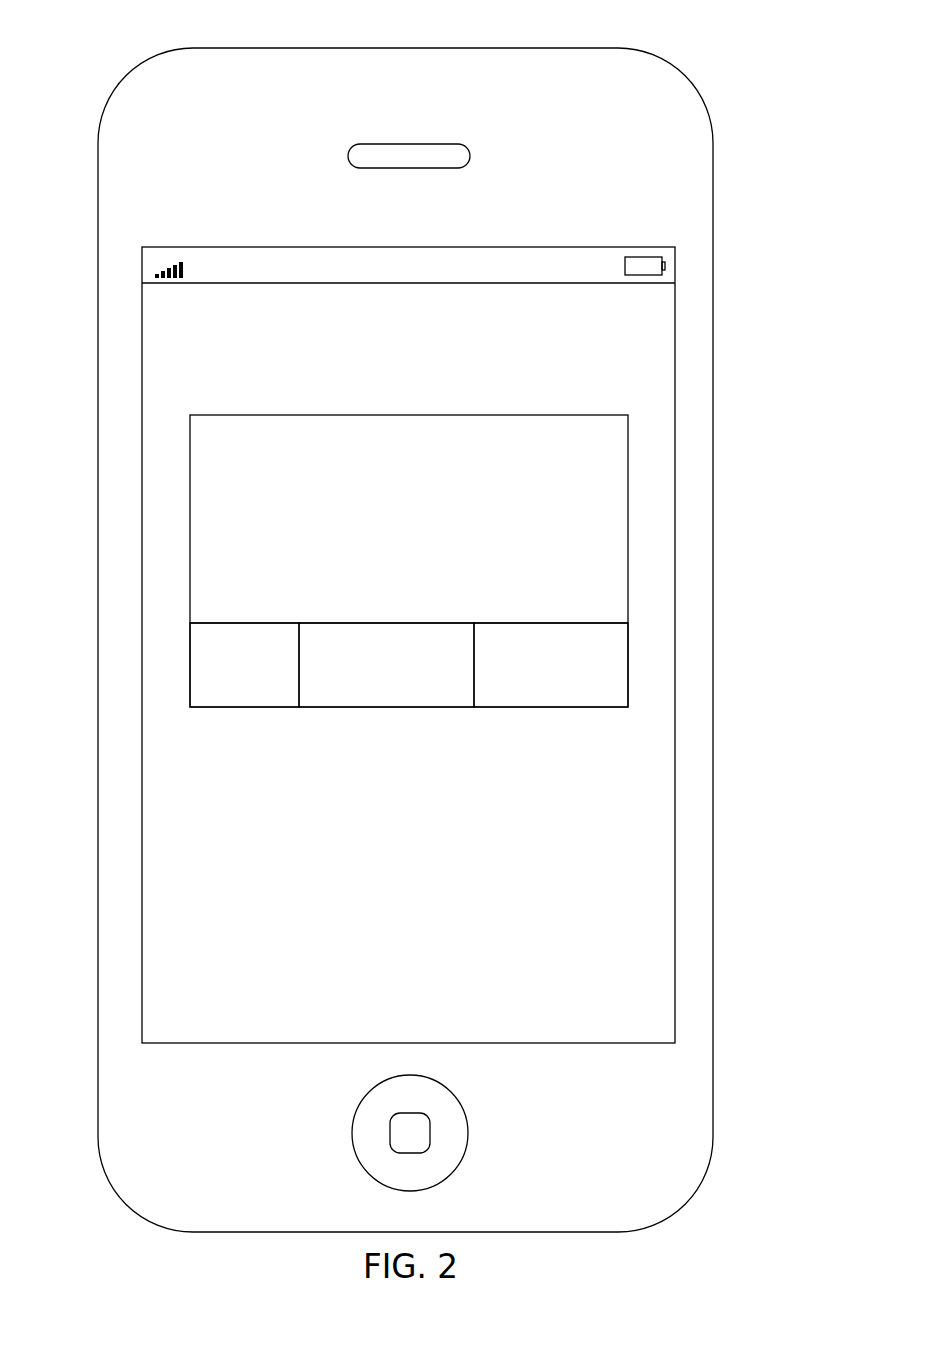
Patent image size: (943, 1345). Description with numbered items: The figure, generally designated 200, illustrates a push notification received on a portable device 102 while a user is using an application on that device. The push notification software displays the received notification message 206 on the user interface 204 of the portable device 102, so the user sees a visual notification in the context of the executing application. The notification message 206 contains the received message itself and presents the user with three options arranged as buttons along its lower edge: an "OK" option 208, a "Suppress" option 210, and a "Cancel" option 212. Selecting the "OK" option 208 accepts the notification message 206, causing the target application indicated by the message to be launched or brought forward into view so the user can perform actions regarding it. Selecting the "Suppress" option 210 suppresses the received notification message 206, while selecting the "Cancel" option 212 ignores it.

The push notification illustration 200 is at (692, 56).
The portable device 102 is at (124, 74).
The user interface 204 is at (675, 314).
The notification message 206 is at (628, 492).
The OK option 208 is at (247, 688).
The Suppress option 210 is at (393, 683).
The Cancel option 212 is at (556, 688).